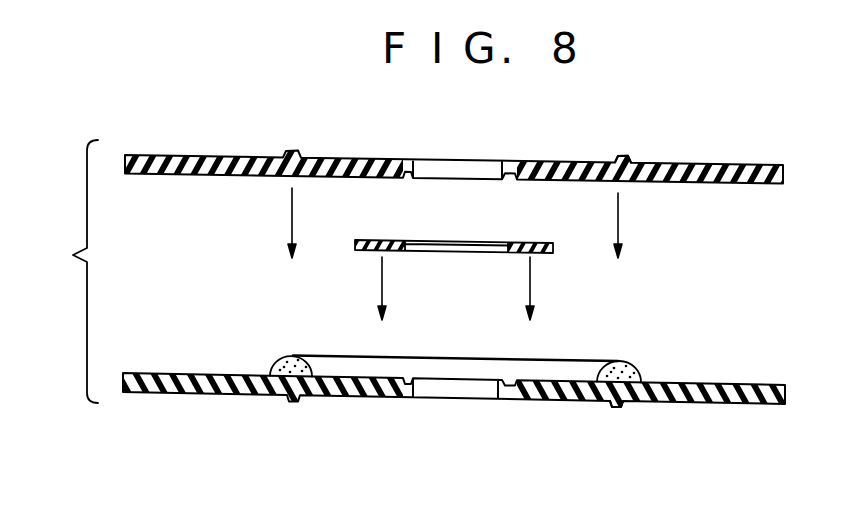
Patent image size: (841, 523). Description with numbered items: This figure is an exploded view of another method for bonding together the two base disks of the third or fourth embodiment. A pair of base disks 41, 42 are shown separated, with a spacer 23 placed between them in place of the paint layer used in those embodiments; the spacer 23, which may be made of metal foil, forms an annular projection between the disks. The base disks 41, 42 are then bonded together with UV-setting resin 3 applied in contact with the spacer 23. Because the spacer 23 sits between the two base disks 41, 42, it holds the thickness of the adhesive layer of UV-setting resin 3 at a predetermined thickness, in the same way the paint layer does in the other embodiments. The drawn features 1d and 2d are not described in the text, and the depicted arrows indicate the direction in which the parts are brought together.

The base disk 41 is at (757, 165).
The base disk 42 is at (740, 386).
The projection of upper plate 1d is at (622, 157).
The projection of lower plate 2d is at (617, 406).
The UV-setting resin 3 is at (636, 363).
The spacer 23 is at (549, 253).